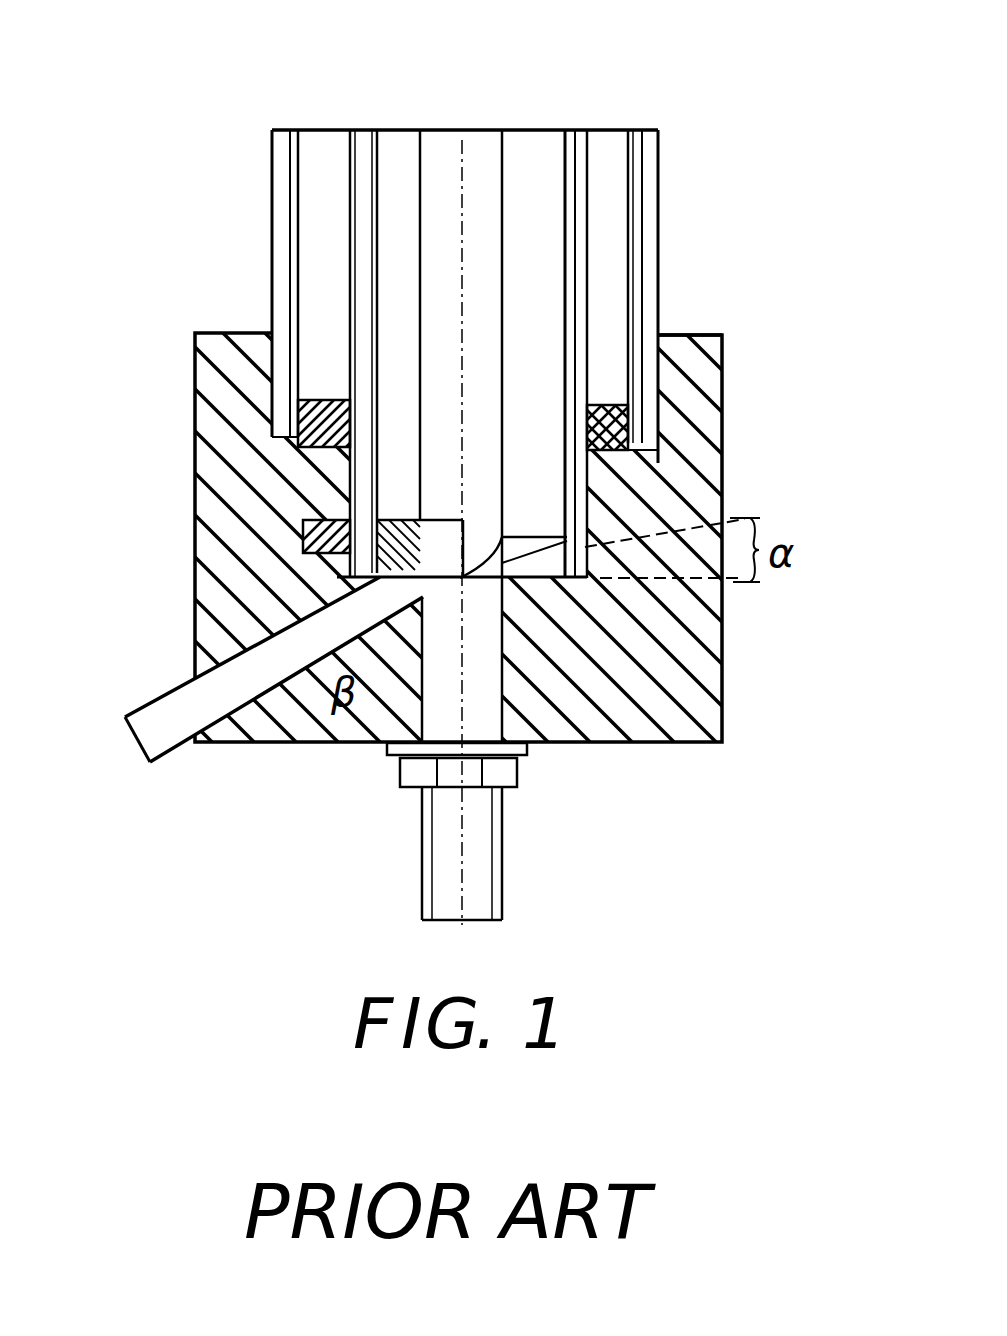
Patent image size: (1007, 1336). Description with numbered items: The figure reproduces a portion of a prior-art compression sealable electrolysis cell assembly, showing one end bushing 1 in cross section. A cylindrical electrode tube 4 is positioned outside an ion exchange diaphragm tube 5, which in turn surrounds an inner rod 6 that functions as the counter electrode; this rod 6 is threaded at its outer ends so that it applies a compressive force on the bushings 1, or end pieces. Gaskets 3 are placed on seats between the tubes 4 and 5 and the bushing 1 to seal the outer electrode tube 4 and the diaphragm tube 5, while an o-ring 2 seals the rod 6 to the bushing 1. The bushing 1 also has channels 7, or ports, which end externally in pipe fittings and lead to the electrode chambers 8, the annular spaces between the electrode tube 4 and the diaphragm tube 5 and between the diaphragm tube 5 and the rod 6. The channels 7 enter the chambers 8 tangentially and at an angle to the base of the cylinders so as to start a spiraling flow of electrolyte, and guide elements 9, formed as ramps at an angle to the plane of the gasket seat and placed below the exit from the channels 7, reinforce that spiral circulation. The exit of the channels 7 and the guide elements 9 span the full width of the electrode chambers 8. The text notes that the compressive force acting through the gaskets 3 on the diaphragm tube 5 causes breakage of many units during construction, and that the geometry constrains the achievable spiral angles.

The bushing 1 is at (705, 670).
The o-ring 2 is at (630, 742).
The gasket 3 is at (713, 327).
The cylindrical electrode tube 4 is at (655, 213).
The ion exchange diaphragm tube 5 is at (353, 497).
The rod 6 is at (486, 162).
The channel 7 is at (153, 727).
The electrode chamber 8 is at (323, 167).
The guide element 9 is at (353, 533).